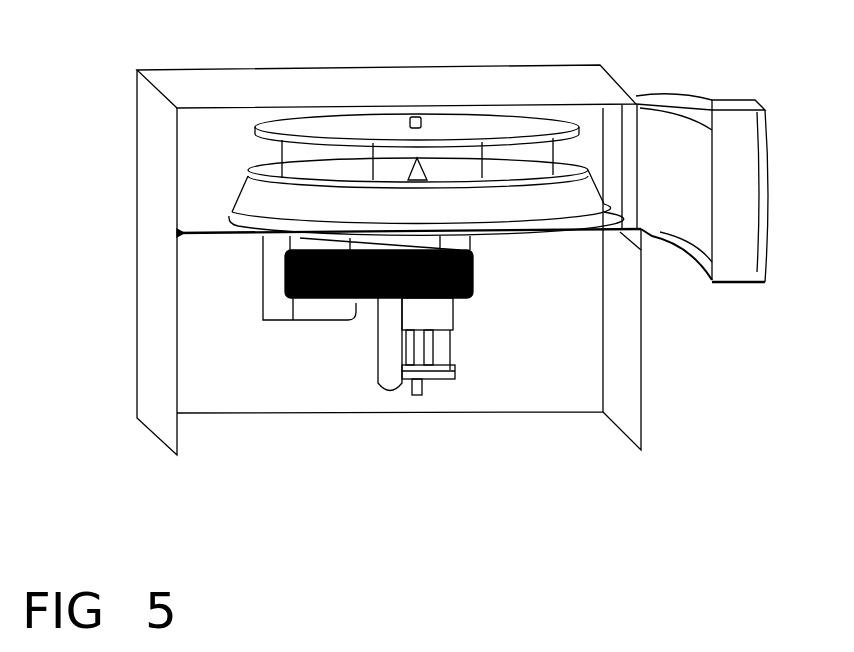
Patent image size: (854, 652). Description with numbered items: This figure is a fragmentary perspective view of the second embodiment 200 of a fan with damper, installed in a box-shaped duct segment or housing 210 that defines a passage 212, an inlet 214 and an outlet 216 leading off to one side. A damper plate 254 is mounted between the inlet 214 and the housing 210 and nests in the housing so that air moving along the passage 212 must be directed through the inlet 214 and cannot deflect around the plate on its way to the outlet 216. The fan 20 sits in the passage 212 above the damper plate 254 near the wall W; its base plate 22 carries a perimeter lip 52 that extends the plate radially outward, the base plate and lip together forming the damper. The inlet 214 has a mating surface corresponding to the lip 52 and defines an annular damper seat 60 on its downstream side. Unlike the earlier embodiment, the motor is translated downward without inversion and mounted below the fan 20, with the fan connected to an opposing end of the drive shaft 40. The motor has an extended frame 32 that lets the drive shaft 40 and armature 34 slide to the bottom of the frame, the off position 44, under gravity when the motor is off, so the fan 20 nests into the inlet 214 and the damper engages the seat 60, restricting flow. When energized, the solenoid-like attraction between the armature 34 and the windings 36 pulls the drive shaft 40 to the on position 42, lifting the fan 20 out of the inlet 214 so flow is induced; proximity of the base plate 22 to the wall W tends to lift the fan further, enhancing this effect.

The second embodiment 200 is at (143, 487).
The housing 210 is at (155, 283).
The passage 212 is at (188, 153).
The wall W is at (543, 80).
The damper plate 254 is at (197, 220).
The outlet 216 is at (727, 103).
The base plate 22 is at (363, 128).
The perimeter lip 52 is at (261, 127).
The fan 20 is at (210, 182).
The damper seat 60 is at (255, 165).
The inlet 214 is at (303, 171).
The windings 36 is at (470, 270).
The motor frame 32 is at (385, 350).
The armature 34 is at (435, 318).
The off position 44 is at (447, 353).
The on position 42 is at (455, 300).
The drive shaft 40 is at (425, 395).